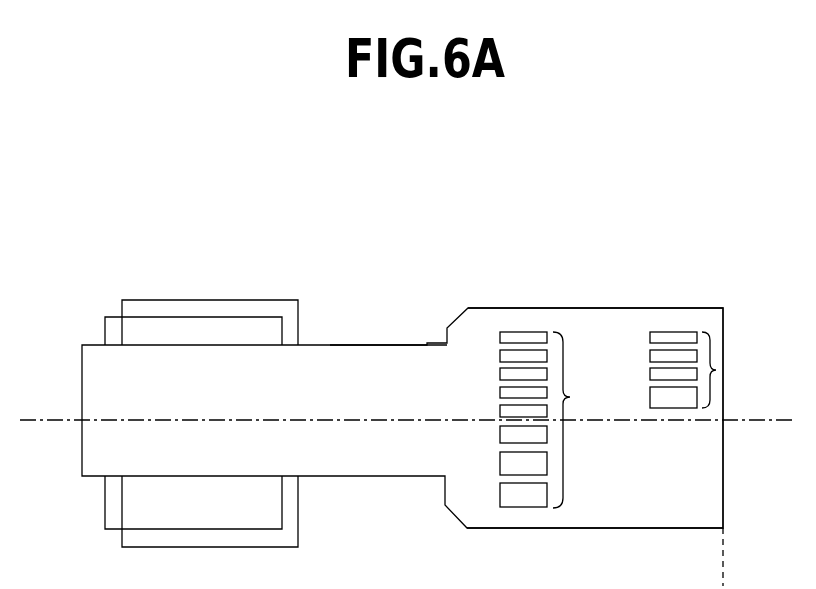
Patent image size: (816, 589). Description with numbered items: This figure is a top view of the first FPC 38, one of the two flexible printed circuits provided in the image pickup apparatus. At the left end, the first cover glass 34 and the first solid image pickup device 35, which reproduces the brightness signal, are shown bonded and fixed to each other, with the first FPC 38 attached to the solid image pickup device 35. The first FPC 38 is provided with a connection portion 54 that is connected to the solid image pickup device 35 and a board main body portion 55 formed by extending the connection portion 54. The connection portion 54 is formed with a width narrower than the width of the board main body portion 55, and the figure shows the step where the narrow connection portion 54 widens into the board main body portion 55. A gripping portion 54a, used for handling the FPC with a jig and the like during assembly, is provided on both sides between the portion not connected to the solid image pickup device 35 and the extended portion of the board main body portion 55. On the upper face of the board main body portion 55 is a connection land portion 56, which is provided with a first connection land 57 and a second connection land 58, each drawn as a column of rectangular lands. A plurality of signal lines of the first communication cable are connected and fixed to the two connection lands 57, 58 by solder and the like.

The first cover glass 34 is at (205, 308).
The first solid image pickup device 35 is at (115, 330).
The first FPC 38 is at (485, 302).
The connection portion 54 is at (330, 357).
The gripping portion 54a is at (395, 345).
The board main body portion 55 is at (635, 327).
The connection land portion 56 is at (693, 177).
The first connection land 57 is at (570, 397).
The second connection land 58 is at (716, 370).